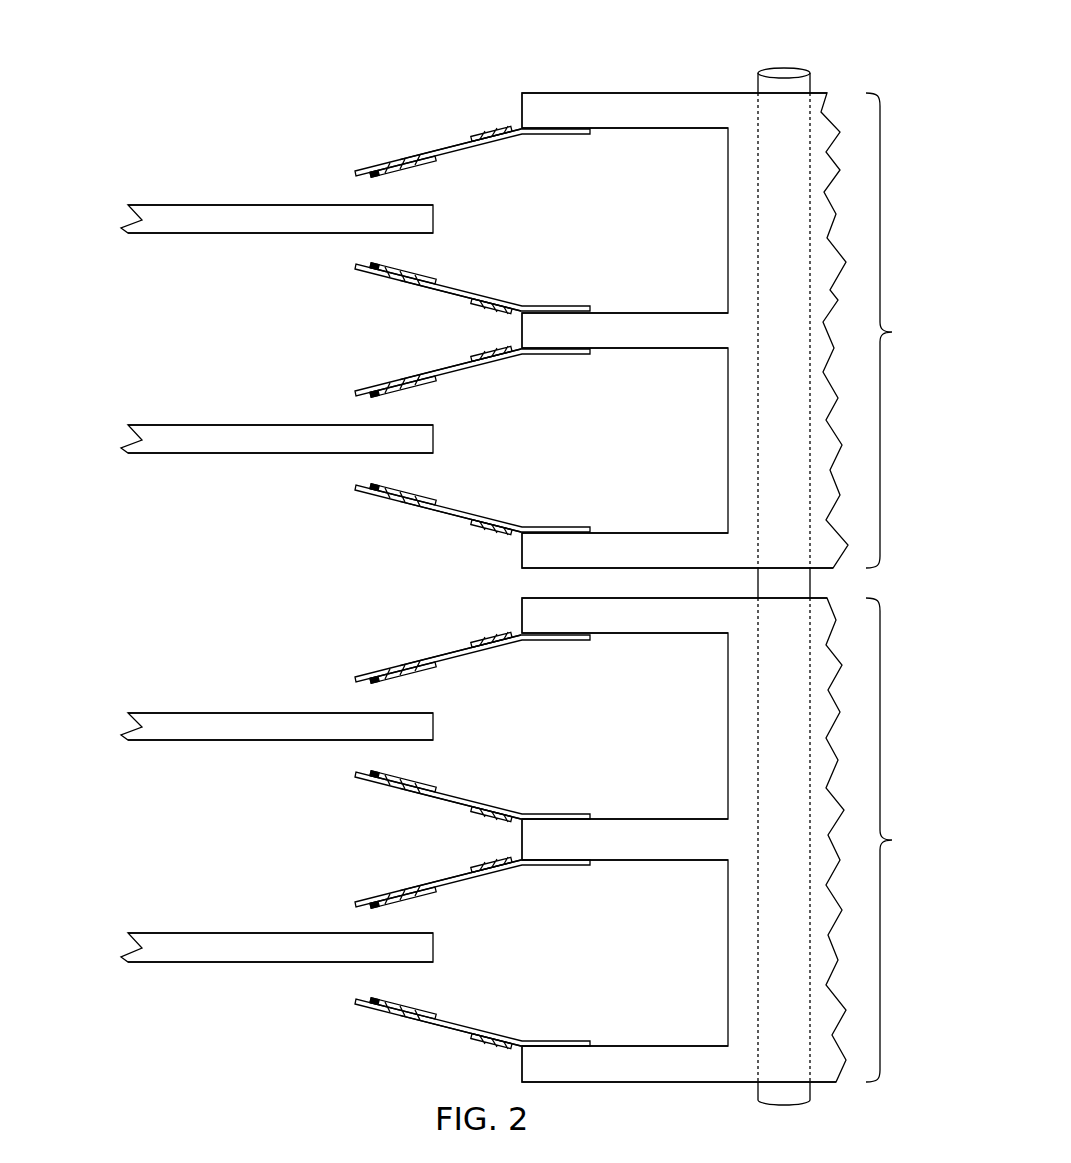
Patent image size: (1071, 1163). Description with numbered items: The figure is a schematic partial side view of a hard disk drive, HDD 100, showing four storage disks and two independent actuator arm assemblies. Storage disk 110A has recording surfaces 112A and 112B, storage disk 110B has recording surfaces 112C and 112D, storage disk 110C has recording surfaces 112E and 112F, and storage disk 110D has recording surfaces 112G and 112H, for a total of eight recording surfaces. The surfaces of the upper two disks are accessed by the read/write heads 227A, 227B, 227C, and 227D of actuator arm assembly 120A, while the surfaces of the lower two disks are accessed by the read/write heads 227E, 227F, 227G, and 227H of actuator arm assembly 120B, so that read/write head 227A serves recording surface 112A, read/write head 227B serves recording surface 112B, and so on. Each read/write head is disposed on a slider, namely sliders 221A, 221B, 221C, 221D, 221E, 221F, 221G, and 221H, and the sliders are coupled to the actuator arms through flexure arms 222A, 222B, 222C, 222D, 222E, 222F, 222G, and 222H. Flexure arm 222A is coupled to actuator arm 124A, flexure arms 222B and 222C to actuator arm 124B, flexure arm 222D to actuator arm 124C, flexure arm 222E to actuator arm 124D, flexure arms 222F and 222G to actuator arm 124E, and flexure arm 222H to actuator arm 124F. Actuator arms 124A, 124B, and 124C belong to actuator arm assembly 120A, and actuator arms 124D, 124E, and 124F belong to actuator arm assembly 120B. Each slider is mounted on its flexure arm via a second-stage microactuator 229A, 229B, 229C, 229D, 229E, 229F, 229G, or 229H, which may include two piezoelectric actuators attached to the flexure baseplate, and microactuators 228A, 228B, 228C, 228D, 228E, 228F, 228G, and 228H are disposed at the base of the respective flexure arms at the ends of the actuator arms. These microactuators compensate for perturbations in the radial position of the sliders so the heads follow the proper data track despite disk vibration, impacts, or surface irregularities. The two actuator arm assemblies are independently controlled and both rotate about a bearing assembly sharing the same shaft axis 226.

The HDD 100 is at (189, 46).
The storage disk 110A is at (98, 218).
The storage disk 110B is at (98, 438).
The storage disk 110C is at (98, 726).
The storage disk 110D is at (98, 947).
The recording surface 112A is at (234, 205).
The recording surface 112B is at (234, 233).
The recording surface 112C is at (234, 425).
The recording surface 112D is at (234, 453).
The recording surface 112E is at (234, 713).
The recording surface 112F is at (234, 740).
The recording surface 112G is at (234, 933).
The recording surface 112H is at (234, 962).
The actuator arm assembly 120A is at (892, 332).
The actuator arm assembly 120B is at (892, 840).
The actuator arm 124A is at (708, 117).
The actuator arm 124B is at (708, 339).
The actuator arm 124C is at (708, 559).
The actuator arm 124D is at (708, 625).
The actuator arm 124E is at (708, 846).
The actuator arm 124F is at (708, 1070).
The slider 221A is at (433, 165).
The slider 221B is at (433, 275).
The slider 221C is at (433, 385).
The slider 221D is at (433, 496).
The slider 221E is at (433, 671).
The slider 221F is at (433, 783).
The slider 221G is at (433, 896).
The slider 221H is at (433, 1010).
The flexure arm 222A is at (455, 145).
The flexure arm 222B is at (455, 295).
The flexure arm 222C is at (455, 364).
The flexure arm 222D is at (455, 516).
The flexure arm 222E is at (455, 651).
The flexure arm 222F is at (455, 803).
The flexure arm 222G is at (455, 876).
The flexure arm 222H is at (455, 1030).
The shaft axis 226 is at (757, 78).
The read/write head 227A is at (368, 177).
The read/write head 227B is at (368, 264).
The read/write head 227C is at (368, 397).
The read/write head 227D is at (368, 485).
The read/write head 227E is at (368, 683).
The read/write head 227F is at (368, 772).
The read/write head 227G is at (368, 908).
The read/write head 227H is at (368, 999).
The microactuator 228A is at (477, 133).
The microactuator 228B is at (477, 308).
The microactuator 228C is at (477, 353).
The microactuator 228D is at (477, 529).
The microactuator 228E is at (477, 639).
The microactuator 228F is at (477, 816).
The microactuator 228G is at (477, 864).
The microactuator 228H is at (477, 1043).
The microactuator 229A is at (457, 151).
The microactuator 229B is at (457, 289).
The microactuator 229C is at (457, 371).
The microactuator 229D is at (457, 510).
The microactuator 229E is at (457, 657).
The microactuator 229F is at (457, 797).
The microactuator 229G is at (457, 882).
The microactuator 229H is at (457, 1024).